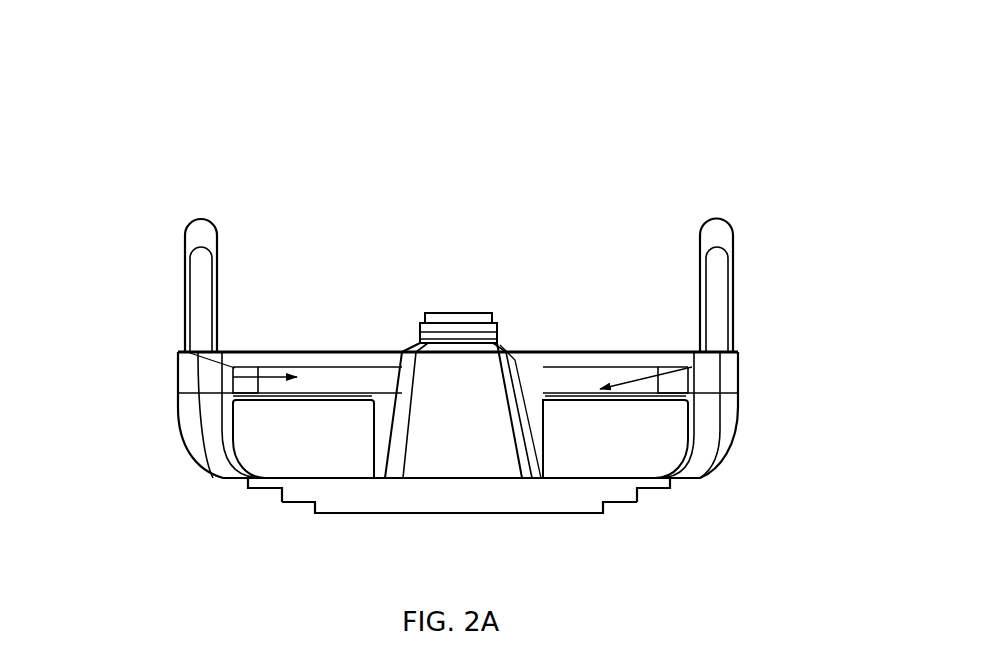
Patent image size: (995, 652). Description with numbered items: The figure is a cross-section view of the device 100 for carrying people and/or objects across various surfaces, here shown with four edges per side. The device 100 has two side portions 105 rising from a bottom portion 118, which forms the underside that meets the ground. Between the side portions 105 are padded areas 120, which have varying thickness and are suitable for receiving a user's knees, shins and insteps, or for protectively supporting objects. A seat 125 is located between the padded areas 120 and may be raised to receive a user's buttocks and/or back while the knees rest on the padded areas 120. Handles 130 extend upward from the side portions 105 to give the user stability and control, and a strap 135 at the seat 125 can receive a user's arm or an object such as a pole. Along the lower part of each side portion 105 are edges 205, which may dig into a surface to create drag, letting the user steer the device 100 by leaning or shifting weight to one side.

The device 100 is at (543, 165).
The side portion 105 is at (175, 392).
The bottom portion 118 is at (403, 517).
The padded area 120 is at (337, 440).
The seat 125 is at (408, 349).
The handle 130 is at (188, 347).
The strap 135 is at (493, 317).
The edge 205 is at (280, 493).